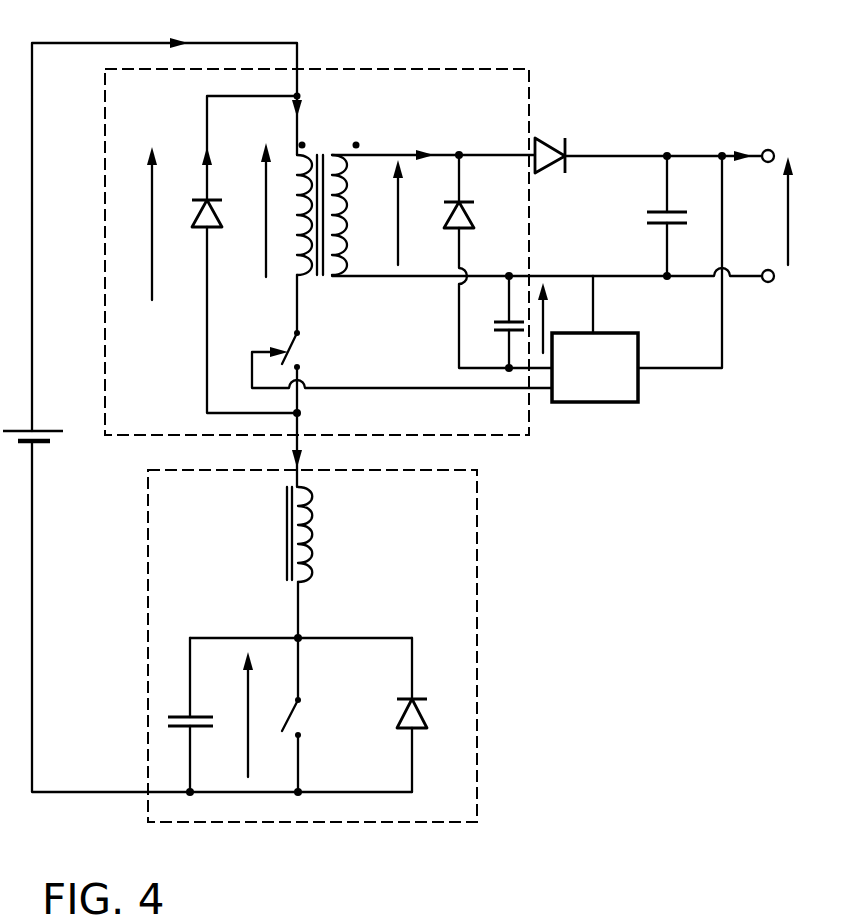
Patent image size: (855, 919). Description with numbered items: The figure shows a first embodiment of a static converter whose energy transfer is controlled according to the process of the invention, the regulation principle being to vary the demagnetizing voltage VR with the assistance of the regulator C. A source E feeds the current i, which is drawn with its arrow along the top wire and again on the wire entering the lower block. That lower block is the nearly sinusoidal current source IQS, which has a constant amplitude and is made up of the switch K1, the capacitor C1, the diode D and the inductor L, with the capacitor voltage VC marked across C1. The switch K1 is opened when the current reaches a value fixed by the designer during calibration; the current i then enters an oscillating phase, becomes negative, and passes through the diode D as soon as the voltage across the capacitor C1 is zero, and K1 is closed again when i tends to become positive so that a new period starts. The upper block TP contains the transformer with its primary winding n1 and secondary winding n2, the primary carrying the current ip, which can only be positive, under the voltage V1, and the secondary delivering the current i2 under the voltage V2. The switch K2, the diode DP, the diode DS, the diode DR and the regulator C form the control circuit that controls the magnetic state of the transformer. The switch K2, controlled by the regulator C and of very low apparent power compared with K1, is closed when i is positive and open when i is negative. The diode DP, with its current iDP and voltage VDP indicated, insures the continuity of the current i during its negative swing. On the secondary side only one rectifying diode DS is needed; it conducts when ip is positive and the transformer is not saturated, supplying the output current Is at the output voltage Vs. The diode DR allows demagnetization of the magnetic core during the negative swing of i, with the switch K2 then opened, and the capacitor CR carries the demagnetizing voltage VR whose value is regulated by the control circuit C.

The current i is at (234, 239).
The DC voltage source E is at (33, 419).
The transformer/pulse block TP is at (317, 235).
The diode Dp DP is at (193, 229).
The primary diode current iDP is at (189, 145).
The primary diode voltage VDP is at (133, 223).
The primary winding voltage V1 is at (246, 222).
The current Ip in the primary winding ip is at (273, 197).
The primary winding n1 is at (311, 195).
The secondary winding n2 is at (351, 195).
The secondary current i2 is at (415, 137).
The secondary voltage V2 is at (382, 212).
The diode Dr DR is at (498, 259).
The reservoir capacitor CR is at (500, 322).
The demagnetizing voltage Vr VR is at (560, 318).
The rectifying diode Ds DS is at (648, 145).
The output current Is is at (746, 139).
The output voltage Vs is at (804, 211).
The regulator C is at (595, 339).
The switch K2 is at (402, 359).
The nearly sinusoidal current source IQS is at (339, 646).
The inductor L is at (313, 534).
The capacitor C1 is at (186, 717).
The capacitor voltage VC is at (264, 714).
The switch K1 is at (307, 717).
The diode D is at (427, 715).